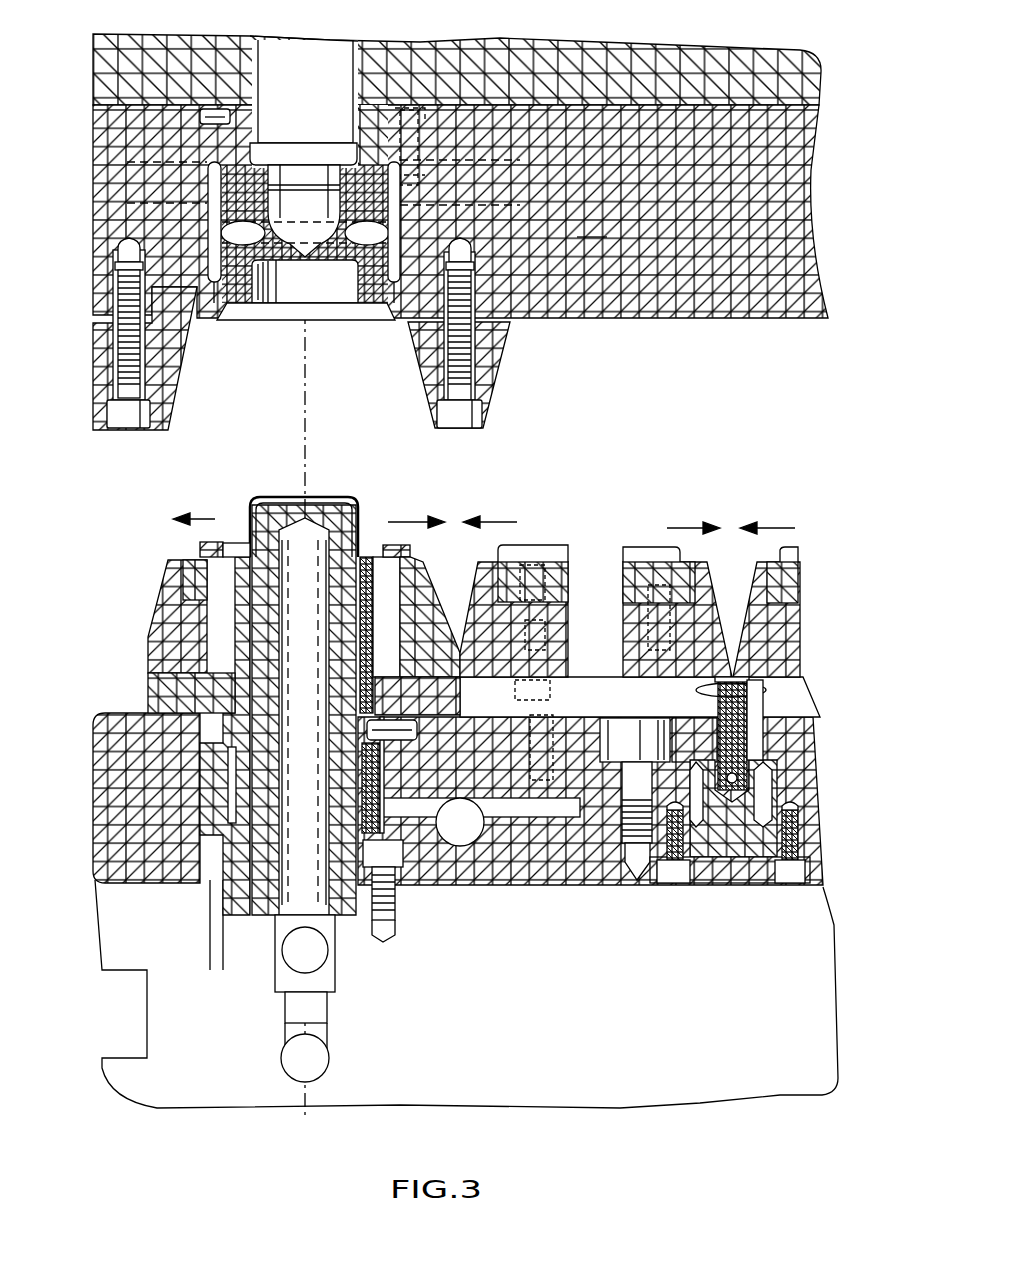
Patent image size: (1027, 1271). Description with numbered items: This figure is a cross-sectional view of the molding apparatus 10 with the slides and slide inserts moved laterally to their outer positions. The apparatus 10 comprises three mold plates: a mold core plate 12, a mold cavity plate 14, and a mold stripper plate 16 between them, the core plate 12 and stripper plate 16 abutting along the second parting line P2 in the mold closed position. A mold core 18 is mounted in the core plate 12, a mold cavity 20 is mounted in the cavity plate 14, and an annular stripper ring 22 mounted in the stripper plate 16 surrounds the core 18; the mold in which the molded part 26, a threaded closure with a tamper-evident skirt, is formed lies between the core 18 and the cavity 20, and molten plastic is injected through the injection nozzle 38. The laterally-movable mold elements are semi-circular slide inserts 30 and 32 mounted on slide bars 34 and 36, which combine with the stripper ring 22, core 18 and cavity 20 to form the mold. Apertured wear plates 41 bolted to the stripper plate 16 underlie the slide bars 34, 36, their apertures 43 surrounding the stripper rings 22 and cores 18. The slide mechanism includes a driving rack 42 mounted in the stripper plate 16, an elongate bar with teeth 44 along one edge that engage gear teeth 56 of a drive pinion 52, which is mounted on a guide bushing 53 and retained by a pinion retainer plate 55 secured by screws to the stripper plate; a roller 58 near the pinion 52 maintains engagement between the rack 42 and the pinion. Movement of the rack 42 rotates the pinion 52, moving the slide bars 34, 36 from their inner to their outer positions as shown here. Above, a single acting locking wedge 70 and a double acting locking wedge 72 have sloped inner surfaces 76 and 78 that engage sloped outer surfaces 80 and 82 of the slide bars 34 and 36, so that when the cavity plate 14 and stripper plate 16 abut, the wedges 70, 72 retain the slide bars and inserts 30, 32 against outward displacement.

The molding apparatus 10 is at (632, 458).
The mold core plate 12 is at (502, 1010).
The mold cavity plate 14 is at (460, 177).
The mold stripper plate 16 is at (160, 824).
The mold core 18 is at (258, 652).
The mold cavity 20 is at (215, 320).
The stripper ring 22 is at (370, 563).
The molded part 26 is at (283, 496).
The slide insert 30 is at (197, 543).
The slide insert 32 is at (410, 556).
The slide bar 34 is at (163, 642).
The slide bar 36 is at (718, 667).
The injection nozzle 38 is at (298, 235).
The wear plate 41 is at (165, 703).
The driving rack 42 is at (694, 740).
The aperture 43 is at (388, 693).
The teeth 44 is at (703, 723).
The drive pinion 52 is at (750, 750).
The guide bushing 53 is at (750, 808).
The pinion retainer plate 55 is at (762, 878).
The gear teeth 56 is at (760, 708).
The roller 58 is at (634, 755).
The single acting locking wedge 70 is at (180, 368).
The double acting locking wedge 72 is at (448, 359).
The sloped inner surface 76 is at (183, 392).
The sloped inner surface 78 is at (420, 348).
The sloped outer surface 80 is at (160, 606).
The sloped outer surface 82 is at (450, 600).
The second parting line P2 is at (497, 887).